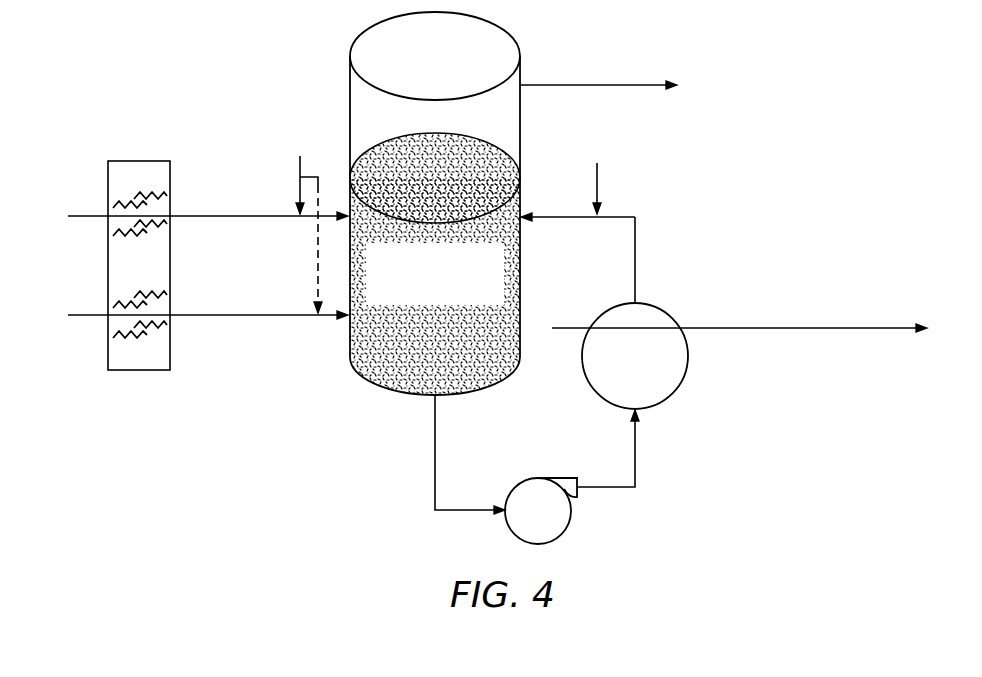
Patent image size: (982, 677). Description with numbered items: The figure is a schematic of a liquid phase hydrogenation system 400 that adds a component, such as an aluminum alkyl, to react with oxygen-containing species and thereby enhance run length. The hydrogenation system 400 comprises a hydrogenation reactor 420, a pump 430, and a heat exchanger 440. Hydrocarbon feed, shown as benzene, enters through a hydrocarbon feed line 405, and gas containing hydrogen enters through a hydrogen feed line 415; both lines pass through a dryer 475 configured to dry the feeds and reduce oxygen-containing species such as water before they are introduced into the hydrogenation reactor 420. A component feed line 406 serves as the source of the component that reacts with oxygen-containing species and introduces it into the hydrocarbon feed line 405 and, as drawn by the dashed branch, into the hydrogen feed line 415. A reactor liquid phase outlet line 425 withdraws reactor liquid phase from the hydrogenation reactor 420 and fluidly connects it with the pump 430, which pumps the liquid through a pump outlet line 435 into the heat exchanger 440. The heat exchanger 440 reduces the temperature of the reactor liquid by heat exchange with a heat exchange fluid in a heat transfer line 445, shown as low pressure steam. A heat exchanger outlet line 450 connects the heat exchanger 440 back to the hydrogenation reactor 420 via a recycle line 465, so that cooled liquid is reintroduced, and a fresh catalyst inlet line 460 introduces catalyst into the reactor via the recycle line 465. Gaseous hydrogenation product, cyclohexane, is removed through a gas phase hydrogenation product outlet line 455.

The hydrogenation system 400 is at (827, 83).
The hydrocarbon feed line 405 is at (225, 191).
The component feed line 406 is at (266, 141).
The hydrogen feed line 415 is at (225, 290).
The hydrogenation reactor 420 is at (347, 73).
The reactor liquid phase outlet line 425 is at (432, 428).
The pump 430 is at (515, 536).
The pump outlet line 435 is at (637, 455).
The heat exchanger 440 is at (686, 381).
The heat transfer line 445 is at (840, 330).
The heat exchanger outlet line 450 is at (637, 238).
The gas phase hydrogenation product outlet line 455 is at (614, 58).
The fresh catalyst inlet line 460 is at (609, 138).
The recycle line 465 is at (560, 222).
The dryer 475 is at (143, 371).